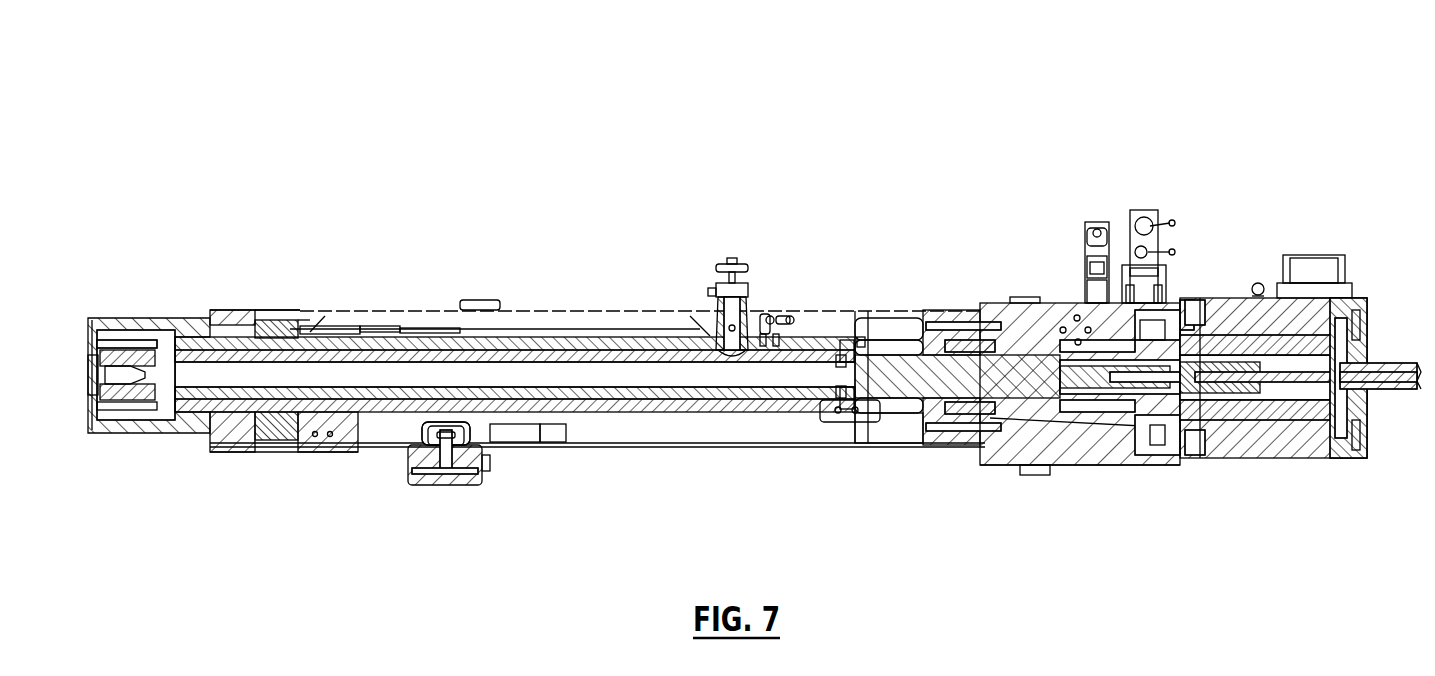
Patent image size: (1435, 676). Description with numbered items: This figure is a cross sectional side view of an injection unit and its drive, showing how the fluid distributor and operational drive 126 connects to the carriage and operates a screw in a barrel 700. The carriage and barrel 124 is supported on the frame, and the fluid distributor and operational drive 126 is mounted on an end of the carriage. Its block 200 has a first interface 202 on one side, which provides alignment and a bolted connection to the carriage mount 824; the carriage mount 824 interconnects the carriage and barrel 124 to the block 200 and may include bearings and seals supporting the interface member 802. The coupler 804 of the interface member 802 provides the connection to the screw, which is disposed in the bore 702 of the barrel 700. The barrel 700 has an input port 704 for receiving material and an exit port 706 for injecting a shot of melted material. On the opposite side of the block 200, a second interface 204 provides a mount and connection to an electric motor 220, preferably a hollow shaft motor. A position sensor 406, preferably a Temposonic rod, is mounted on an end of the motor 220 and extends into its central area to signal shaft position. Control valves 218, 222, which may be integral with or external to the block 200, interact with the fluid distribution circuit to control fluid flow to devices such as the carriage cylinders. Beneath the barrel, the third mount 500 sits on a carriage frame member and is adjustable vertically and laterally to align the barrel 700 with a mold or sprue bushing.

The carriage and barrel 124 is at (880, 148).
The fluid distributor and operational drive 126 is at (1200, 510).
The block 200 is at (1092, 468).
The first interface 202 is at (967, 455).
The second interface 204 is at (1182, 462).
The control valve 218 is at (1150, 212).
The electric motor 220 is at (1355, 460).
The control valve 222 is at (1100, 222).
The position sensor 406 is at (1392, 395).
The third mount 500 is at (440, 486).
The barrel 700 is at (797, 412).
The bore 702 is at (795, 372).
The input port 704 is at (715, 291).
The exit port 706 is at (93, 378).
The interface member 802 is at (889, 404).
The coupler 804 is at (862, 368).
The carriage mount 824 is at (955, 310).